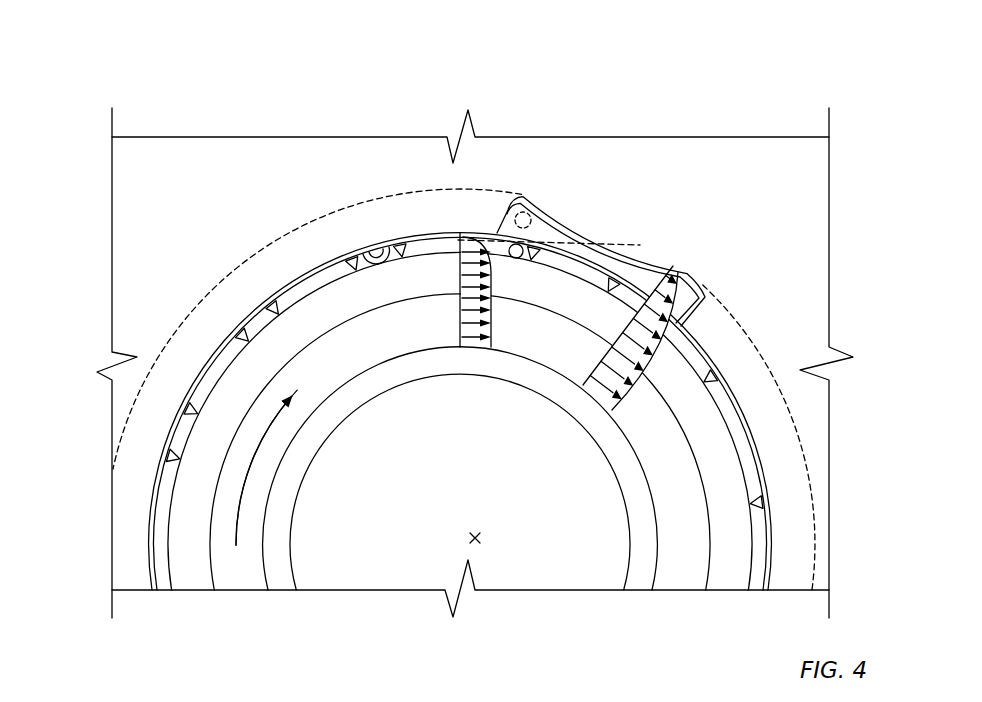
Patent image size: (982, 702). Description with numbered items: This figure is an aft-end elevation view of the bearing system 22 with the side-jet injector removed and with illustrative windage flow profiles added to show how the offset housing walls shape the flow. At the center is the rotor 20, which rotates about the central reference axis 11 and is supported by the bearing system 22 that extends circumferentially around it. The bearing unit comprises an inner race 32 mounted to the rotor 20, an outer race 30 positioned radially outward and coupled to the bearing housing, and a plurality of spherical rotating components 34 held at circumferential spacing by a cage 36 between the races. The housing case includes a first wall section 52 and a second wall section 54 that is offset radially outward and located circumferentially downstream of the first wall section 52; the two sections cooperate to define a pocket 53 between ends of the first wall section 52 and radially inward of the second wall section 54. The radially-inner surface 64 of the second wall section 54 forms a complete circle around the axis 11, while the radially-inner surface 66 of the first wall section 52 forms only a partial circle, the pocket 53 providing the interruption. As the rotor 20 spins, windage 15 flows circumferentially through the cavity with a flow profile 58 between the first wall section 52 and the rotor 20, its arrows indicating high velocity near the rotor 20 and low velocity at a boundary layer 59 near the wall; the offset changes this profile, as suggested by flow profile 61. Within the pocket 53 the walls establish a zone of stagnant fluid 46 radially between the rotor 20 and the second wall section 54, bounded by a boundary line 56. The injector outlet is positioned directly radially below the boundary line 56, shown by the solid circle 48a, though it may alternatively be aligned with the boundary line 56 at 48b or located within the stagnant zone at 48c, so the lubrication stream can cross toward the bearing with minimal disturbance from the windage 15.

The central reference axis 11 is at (480, 540).
The windage 15 is at (258, 443).
The rotor 20 is at (493, 365).
The bearing system 22 is at (152, 92).
The outer race 30 is at (212, 352).
The inner race 32 is at (317, 373).
The rotating components 34 is at (257, 307).
The cage 36 is at (318, 310).
The zone of stagnant fluid 46 is at (634, 223).
The outlet position directly below boundary line 48a is at (517, 270).
The outlet position aligned with boundary line 48b is at (512, 193).
The outlet position within stagnant zone 48c is at (522, 205).
The first wall section 52 is at (288, 248).
The pocket 53 is at (698, 315).
The second wall section 54 is at (508, 148).
The boundary line 56 is at (605, 245).
The flow profile 58 is at (434, 332).
The boundary layer 59 is at (454, 222).
The flow profile 61 is at (642, 418).
The radially-inner surface 64 is at (377, 205).
The radially-inner surface 66 is at (357, 253).